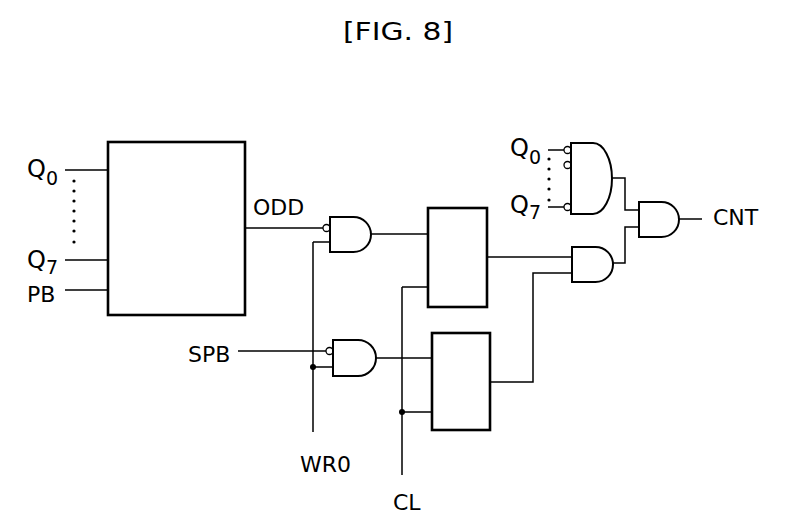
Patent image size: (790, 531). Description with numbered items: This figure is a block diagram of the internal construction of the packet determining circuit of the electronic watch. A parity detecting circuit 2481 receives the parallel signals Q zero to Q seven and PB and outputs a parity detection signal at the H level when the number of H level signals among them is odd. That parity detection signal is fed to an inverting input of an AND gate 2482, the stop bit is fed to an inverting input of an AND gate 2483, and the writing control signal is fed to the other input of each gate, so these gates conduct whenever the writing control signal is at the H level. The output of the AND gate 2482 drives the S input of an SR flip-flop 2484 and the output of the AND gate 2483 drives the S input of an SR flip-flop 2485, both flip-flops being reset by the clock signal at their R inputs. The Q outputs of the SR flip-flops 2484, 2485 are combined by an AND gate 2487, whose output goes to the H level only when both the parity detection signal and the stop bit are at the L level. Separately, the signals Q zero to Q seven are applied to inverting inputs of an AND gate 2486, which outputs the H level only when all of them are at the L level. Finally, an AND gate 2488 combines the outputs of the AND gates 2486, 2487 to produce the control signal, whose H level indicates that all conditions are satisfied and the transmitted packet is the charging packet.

The parity detecting circuit 2481 is at (172, 143).
The AND gate 2482 is at (351, 217).
The AND gate 2483 is at (352, 340).
The SR flip-flop 2484 is at (458, 209).
The SR flip-flop 2485 is at (463, 430).
The AND gate 2486 is at (588, 143).
The AND gate 2487 is at (591, 282).
The AND gate 2488 is at (660, 202).